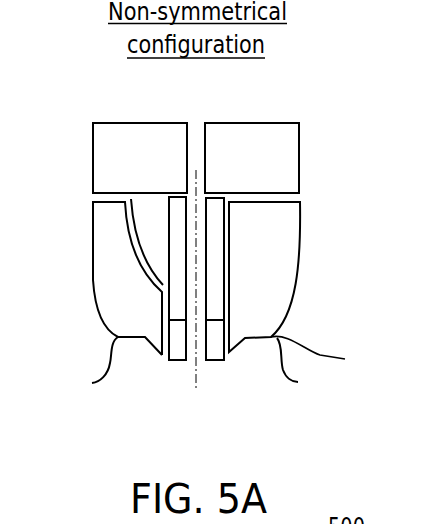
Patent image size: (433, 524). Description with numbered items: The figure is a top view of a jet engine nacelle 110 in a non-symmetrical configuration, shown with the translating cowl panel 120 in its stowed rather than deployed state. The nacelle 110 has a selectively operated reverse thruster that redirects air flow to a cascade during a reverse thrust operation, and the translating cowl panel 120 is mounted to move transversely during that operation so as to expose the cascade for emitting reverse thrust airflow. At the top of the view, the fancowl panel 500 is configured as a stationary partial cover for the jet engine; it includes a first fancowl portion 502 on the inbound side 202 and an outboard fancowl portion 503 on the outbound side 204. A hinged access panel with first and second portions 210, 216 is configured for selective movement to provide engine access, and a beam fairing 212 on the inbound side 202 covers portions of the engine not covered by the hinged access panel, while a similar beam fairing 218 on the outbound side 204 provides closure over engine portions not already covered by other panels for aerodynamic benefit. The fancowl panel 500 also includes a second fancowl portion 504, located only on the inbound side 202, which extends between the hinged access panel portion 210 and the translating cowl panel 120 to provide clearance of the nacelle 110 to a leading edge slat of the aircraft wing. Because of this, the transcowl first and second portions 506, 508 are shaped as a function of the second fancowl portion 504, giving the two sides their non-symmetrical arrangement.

The fancowl panel 500 is at (142, 143).
The first fancowl portion 502 is at (120, 163).
The outboard fancowl portion 503 is at (265, 163).
The second fancowl portion 504 is at (150, 228).
The transcowl first portion 506 is at (125, 303).
The transcowl second portion 508 is at (329, 357).
The nacelle 110 is at (352, 128).
The translating cowl panel 120 is at (196, 369).
The hinged access panel first portion 210 is at (177, 262).
The beam fairing 212 is at (177, 343).
The hinged access panel second portion 216 is at (215, 262).
The beam fairing 218 is at (217, 343).
The inbound side 202 is at (197, 418).
The outbound side 204 is at (313, 420).